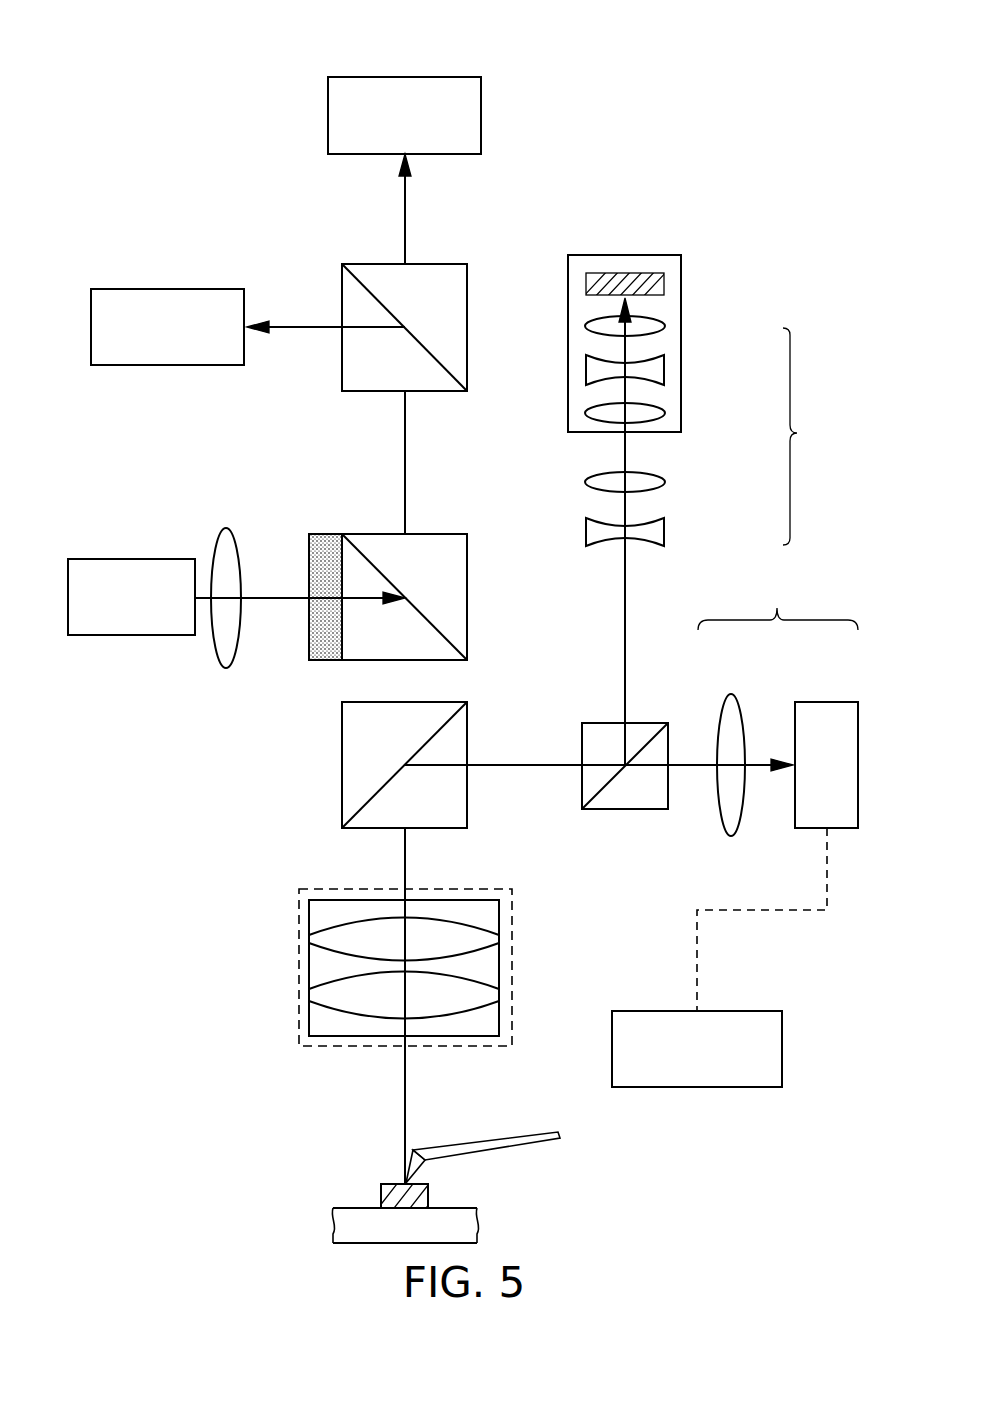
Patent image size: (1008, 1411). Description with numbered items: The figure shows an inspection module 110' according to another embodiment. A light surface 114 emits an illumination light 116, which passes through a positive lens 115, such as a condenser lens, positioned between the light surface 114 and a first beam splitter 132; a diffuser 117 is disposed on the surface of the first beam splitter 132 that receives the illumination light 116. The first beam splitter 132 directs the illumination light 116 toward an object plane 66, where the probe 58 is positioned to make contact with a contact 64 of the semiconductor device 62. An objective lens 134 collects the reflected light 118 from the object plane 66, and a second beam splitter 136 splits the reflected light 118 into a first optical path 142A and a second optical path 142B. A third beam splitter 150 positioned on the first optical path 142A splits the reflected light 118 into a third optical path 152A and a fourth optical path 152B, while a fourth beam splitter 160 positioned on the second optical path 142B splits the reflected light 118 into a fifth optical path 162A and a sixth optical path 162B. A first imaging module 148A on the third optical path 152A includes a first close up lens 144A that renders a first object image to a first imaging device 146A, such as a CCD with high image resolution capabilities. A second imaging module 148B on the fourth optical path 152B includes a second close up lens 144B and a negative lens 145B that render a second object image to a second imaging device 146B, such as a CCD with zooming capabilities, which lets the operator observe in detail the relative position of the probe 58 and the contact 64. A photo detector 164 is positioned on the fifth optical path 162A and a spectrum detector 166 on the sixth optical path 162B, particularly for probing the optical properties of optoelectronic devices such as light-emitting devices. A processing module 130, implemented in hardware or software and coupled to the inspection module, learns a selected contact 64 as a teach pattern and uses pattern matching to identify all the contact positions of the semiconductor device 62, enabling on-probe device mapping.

The spectrum detector 166 is at (407, 77).
The inspection module 110' is at (665, 90).
The sixth optical path 162B is at (407, 212).
The photo detector 164 is at (168, 289).
The fifth optical path 162A is at (292, 331).
The fourth beam splitter 160 is at (470, 328).
The second optical path 142B is at (407, 442).
The second imaging device 146B is at (683, 340).
The second imaging module 148B is at (824, 436).
The second close up lens 144B is at (666, 482).
The negative lens 145B is at (666, 533).
The fourth optical path 152B is at (628, 587).
The light surface 114 is at (132, 559).
The positive lens 115 is at (226, 528).
The illumination light 116 is at (271, 596).
The diffuser 117 is at (326, 533).
The first beam splitter 132 is at (470, 597).
The first imaging module 148A is at (778, 606).
The first close up lens 144A is at (731, 694).
The first imaging device 146A is at (827, 702).
The third beam splitter 150 is at (590, 722).
The second beam splitter 136 is at (470, 727).
The first optical path 142A is at (533, 770).
The third optical path 152A is at (693, 770).
The objective lens 134 is at (298, 968).
The processing module 130 is at (736, 1011).
The reflected light 118 is at (403, 1073).
The probe 58 is at (485, 1140).
The object plane 66 is at (396, 1182).
The contact 64 is at (430, 1193).
The semiconductor device 62 is at (477, 1227).